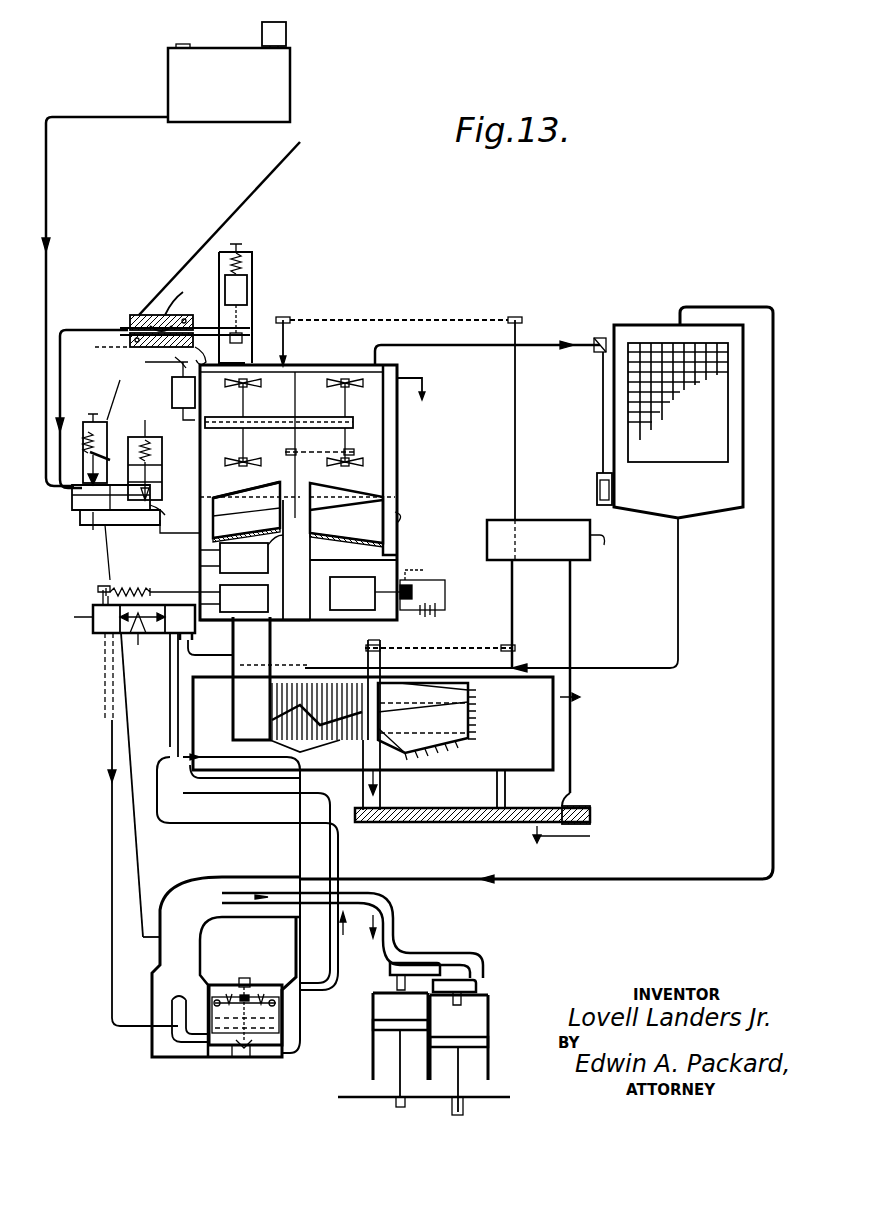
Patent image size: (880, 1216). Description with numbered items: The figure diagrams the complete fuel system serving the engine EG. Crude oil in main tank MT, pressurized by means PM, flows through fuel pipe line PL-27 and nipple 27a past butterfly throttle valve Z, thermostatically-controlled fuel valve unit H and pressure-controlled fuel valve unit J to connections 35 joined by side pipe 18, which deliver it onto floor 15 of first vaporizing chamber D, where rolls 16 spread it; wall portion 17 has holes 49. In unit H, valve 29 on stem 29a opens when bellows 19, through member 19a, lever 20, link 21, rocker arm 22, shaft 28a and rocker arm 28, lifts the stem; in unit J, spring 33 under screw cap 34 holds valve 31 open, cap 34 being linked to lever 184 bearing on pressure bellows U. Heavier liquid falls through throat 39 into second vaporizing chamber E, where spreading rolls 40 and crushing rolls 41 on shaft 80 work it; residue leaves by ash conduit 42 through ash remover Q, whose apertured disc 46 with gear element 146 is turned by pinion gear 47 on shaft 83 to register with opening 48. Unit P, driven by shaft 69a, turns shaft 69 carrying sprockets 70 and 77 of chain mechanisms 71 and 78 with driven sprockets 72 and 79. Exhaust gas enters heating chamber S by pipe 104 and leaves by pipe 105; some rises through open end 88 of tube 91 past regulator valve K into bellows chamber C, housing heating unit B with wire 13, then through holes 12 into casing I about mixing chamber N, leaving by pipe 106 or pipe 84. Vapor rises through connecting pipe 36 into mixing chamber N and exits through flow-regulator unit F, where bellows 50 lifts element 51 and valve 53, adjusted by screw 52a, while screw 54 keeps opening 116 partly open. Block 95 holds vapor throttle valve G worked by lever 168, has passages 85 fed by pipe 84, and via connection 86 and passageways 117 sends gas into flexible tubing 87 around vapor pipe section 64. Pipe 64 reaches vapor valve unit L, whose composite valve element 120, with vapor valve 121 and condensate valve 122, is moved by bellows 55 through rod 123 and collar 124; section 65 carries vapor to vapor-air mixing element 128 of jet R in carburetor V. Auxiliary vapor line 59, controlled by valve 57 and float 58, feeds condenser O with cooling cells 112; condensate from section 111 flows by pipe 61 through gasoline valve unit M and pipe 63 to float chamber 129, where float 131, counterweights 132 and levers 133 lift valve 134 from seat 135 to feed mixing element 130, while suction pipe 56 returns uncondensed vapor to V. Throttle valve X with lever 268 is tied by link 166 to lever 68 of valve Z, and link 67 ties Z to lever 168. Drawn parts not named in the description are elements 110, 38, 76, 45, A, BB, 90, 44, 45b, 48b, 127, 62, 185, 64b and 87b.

The pressure means PM is at (286, 33).
The main tank MT is at (229, 83).
The fuel pipe line section PL-27 is at (46, 193).
The actuating lever 168 is at (148, 300).
The casing block 95 is at (182, 293).
The vapor line throttle valve G is at (185, 320).
The flow passages 85 is at (186, 319).
The special connection 86 is at (136, 318).
The flexible tubing 87 is at (100, 320).
The passageways 117 is at (116, 347).
The lever 184 is at (164, 357).
The exhaust gas pipe 84 is at (206, 353).
The vapor pipe section 64 is at (86, 376).
The operating link 67 is at (108, 393).
The vapor flow-regulator valve unit F is at (252, 280).
The screw mechanism 52a is at (238, 244).
The pressure-operated bellows 50 is at (252, 292).
The valve-carrying element 51 is at (247, 300).
The opening 116 is at (250, 332).
The adjustable screw 54 is at (252, 338).
The valve 53 is at (252, 352).
The driven sprocket 72 is at (283, 317).
The upper sprocket and chain mechanism 71 is at (398, 306).
The driving sprocket 70 is at (515, 316).
The housing I is at (383, 436).
The auxiliary vapor line 59 is at (485, 340).
The pipe 106 is at (422, 386).
The mixing chamber N is at (321, 399).
The shaft 110 is at (292, 416).
The valve 38 is at (336, 467).
The shaft 76 is at (324, 455).
The annular floor 15 is at (326, 470).
The marginal wall portion 17 is at (258, 484).
The heating wire 13 is at (262, 518).
The frustro conical rolls 16 is at (313, 515).
The side pipe 18 is at (225, 508).
The connecting pipe 36 is at (333, 492).
The out-of-line opening 48 is at (383, 505).
The holes 49 is at (212, 488).
The fuel delivery connections 35 is at (186, 495).
The holes 12 is at (395, 540).
The first vaporizing chamber D is at (289, 560).
The thermostatic bellows chamber C is at (336, 564).
The electrical heating unit B is at (355, 548).
The throat member 39 is at (298, 577).
The thermostatic bellows 19 is at (234, 558).
The member 19a is at (190, 572).
The thermostatic bellows unit 55 is at (234, 598).
The circuit 45 is at (423, 586).
The switch A is at (379, 593).
The battery BB is at (428, 617).
The power unit P is at (538, 540).
The shaft 69 is at (515, 395).
The drive shaft 69a is at (604, 544).
The driving sprocket 77 is at (512, 648).
The lower sprocket and chain mechanism 78 is at (465, 648).
The driven sprocket 79 is at (373, 642).
The shaft 80 is at (380, 658).
The ash conduit 42 is at (380, 793).
The heating chamber S is at (373, 723).
The exhaust-heat regulator valve K is at (244, 678).
The lower open end 88 is at (248, 725).
The upflow delivery tube 91 is at (255, 627).
The pipe 90 is at (262, 670).
The crushing rolls 41 is at (318, 680).
The second vaporizing chamber E is at (427, 721).
The spreading rolls 40 is at (438, 713).
The fins 44 is at (476, 712).
The fins 45b is at (445, 755).
The apertured disc 46 is at (410, 822).
The ash remover Q is at (470, 822).
The pinion gear 47 is at (590, 813).
The line 48b is at (574, 836).
The peripheral gear element 146 is at (572, 798).
The shaft 83 is at (570, 745).
The outflow pipe 105 is at (575, 705).
The condensate pipe line section 61 is at (190, 658).
The condensate receiving section 111 is at (680, 585).
The condenser O is at (644, 325).
The cooling cells 112 is at (665, 378).
The suction pipe 56 is at (773, 695).
The valve 57 is at (594, 340).
The float 58 is at (612, 488).
The pressure bellows U is at (172, 396).
The thermostatically-controlled fuel valve unit H is at (95, 442).
The valve stem 29a is at (80, 411).
The grooved collar 124 is at (85, 435).
The rocker arm 22 is at (88, 452).
The link 185 is at (140, 415).
The adjustable screw cap 34 is at (157, 426).
The pressure-controlled fuel valve unit J is at (154, 467).
The spring 33 is at (162, 460).
The rocker arm 28 is at (107, 450).
The shaft 28a is at (119, 470).
The fuel throttle valve Z is at (116, 507).
The fuel valve 29 is at (68, 483).
The connecting nipple 27a is at (72, 495).
The link 21 is at (80, 515).
The actuating lever 68 is at (118, 488).
The valve 31 is at (162, 518).
The lever 20 is at (180, 534).
The operating link 166 is at (100, 578).
The stem 127 is at (100, 594).
The spring 62 is at (128, 582).
The rod 123 is at (186, 594).
The thermostatically-controlled vapor valve unit L is at (88, 617).
The thermostatically-controlled gasoline valve unit M is at (165, 645).
The pipe 64b is at (65, 608).
The vapor valve 121 is at (98, 625).
The composite valve element 120 is at (132, 649).
The condensate valve 122 is at (190, 640).
The gasoline line section 63 is at (170, 700).
The inflow pipe 104 is at (195, 780).
The line 87b is at (115, 715).
The vapor pipe section 65 is at (108, 760).
The main throttle valve X is at (190, 938).
The actuating lever 268 is at (150, 937).
The carburetor V is at (245, 994).
The carburetor jet member R is at (188, 1008).
The gasoline-air mixing element 130 is at (186, 1022).
The vapor-air mixing element 128 is at (170, 1022).
The pivoted levers 133 is at (232, 985).
The float chamber 129 is at (260, 990).
The counter weights 132 is at (300, 983).
The float 131 is at (298, 995).
The valve 134 is at (232, 1052).
The valve seat 135 is at (258, 1053).
The engine EG is at (485, 967).